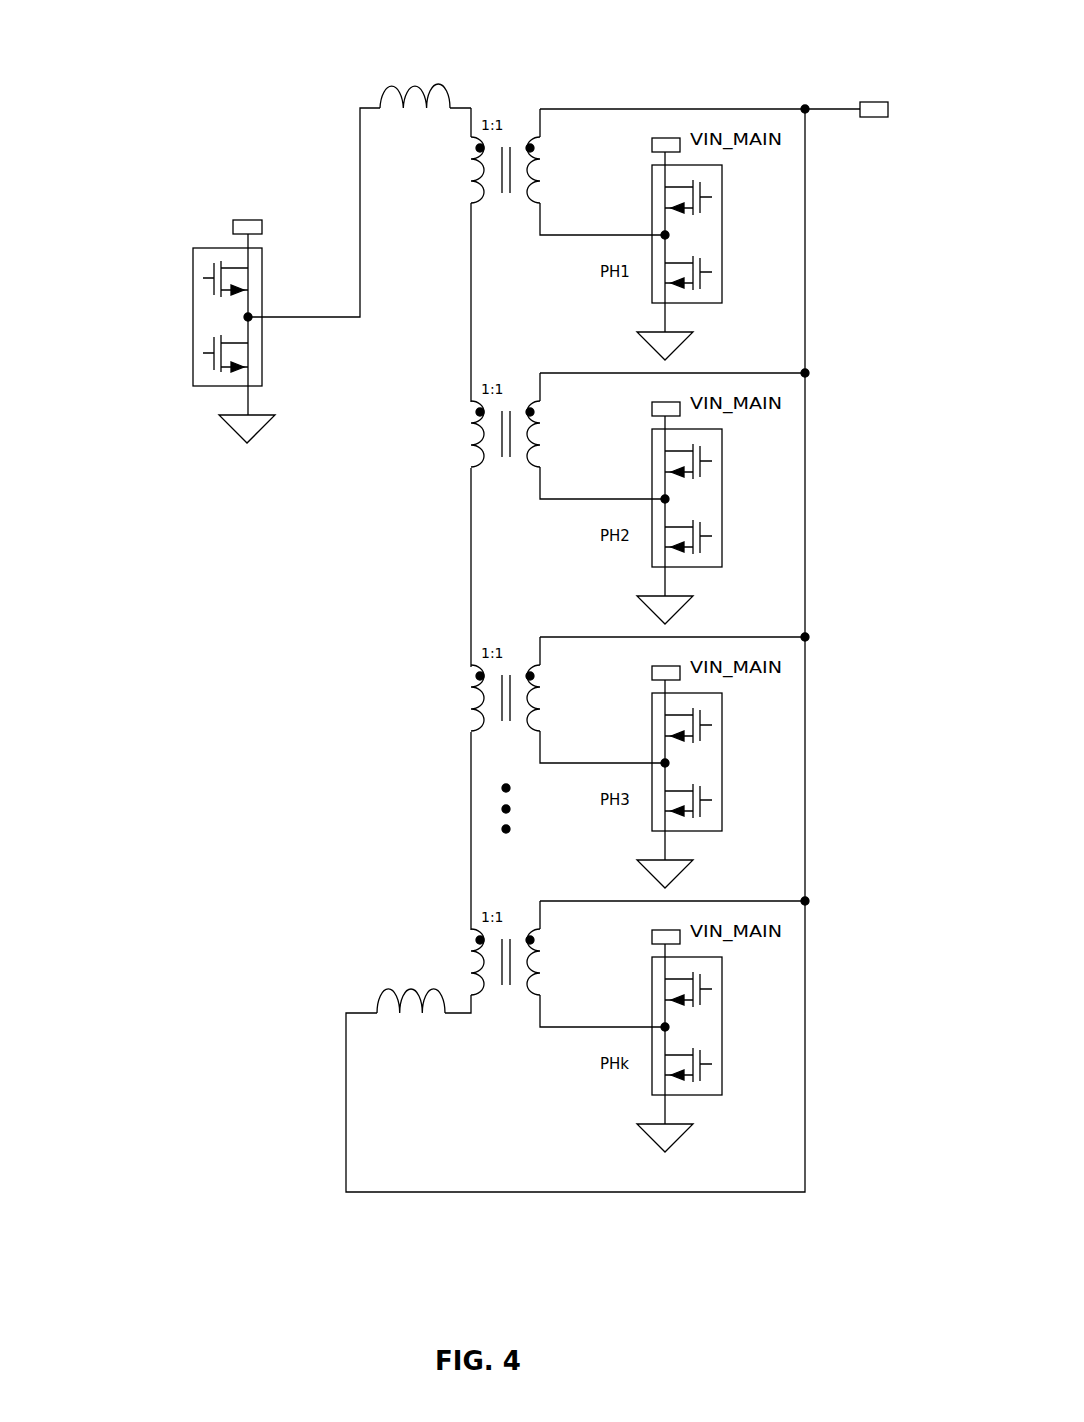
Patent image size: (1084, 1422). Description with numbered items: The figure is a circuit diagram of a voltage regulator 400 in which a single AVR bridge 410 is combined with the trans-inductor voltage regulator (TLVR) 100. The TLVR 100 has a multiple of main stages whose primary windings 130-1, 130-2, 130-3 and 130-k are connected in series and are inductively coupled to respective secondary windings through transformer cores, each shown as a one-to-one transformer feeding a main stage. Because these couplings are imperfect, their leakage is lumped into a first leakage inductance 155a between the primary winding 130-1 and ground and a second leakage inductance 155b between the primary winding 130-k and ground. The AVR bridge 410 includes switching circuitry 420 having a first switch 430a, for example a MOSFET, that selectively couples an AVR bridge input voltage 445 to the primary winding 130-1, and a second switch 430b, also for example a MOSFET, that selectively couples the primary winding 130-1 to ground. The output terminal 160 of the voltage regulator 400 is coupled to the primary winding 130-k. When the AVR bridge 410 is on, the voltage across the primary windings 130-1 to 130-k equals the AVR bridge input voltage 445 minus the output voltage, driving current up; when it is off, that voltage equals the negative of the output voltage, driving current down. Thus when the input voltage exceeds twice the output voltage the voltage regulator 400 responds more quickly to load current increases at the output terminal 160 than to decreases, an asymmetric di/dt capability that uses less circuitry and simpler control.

The trans-inductor voltage regulator (TLVR) 100 is at (612, 1205).
The voltage regulator 400 is at (472, 1236).
The AVR bridge 410 is at (265, 275).
The switching circuitry 420 is at (272, 275).
The first switch 430a is at (203, 252).
The second switch 430b is at (203, 382).
The AVR bridge input voltage 445 is at (233, 220).
The first leakage inductance 155a is at (392, 72).
The second leakage inductance 155b is at (380, 980).
The primary winding 130-1 is at (467, 173).
The primary winding 130-2 is at (467, 450).
The primary winding 130-3 is at (460, 715).
The primary winding 130-k is at (467, 935).
The output terminal 160 is at (888, 100).